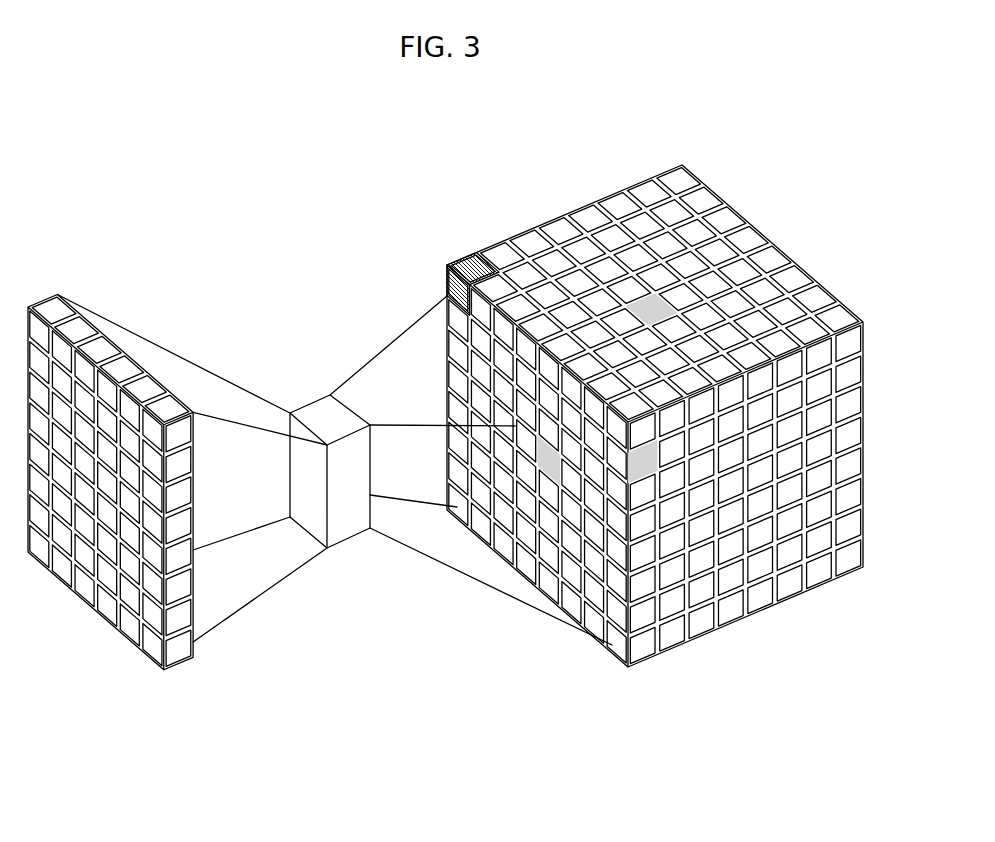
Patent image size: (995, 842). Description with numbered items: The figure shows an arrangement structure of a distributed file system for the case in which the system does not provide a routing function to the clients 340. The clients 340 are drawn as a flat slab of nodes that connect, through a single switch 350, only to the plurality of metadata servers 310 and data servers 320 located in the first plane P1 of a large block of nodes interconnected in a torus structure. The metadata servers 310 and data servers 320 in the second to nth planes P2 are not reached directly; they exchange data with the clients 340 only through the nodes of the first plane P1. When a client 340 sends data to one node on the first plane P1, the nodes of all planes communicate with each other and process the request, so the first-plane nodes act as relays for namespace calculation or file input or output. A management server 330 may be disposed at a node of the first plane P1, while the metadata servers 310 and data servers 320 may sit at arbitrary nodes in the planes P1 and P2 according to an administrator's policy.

The metadata servers 310 is at (641, 455).
The data servers 320 is at (866, 693).
The management server 330 is at (456, 262).
The clients 340 is at (131, 637).
The switch 350 is at (343, 540).
The first plane P1 is at (645, 676).
The second to nth planes P2 is at (768, 625).